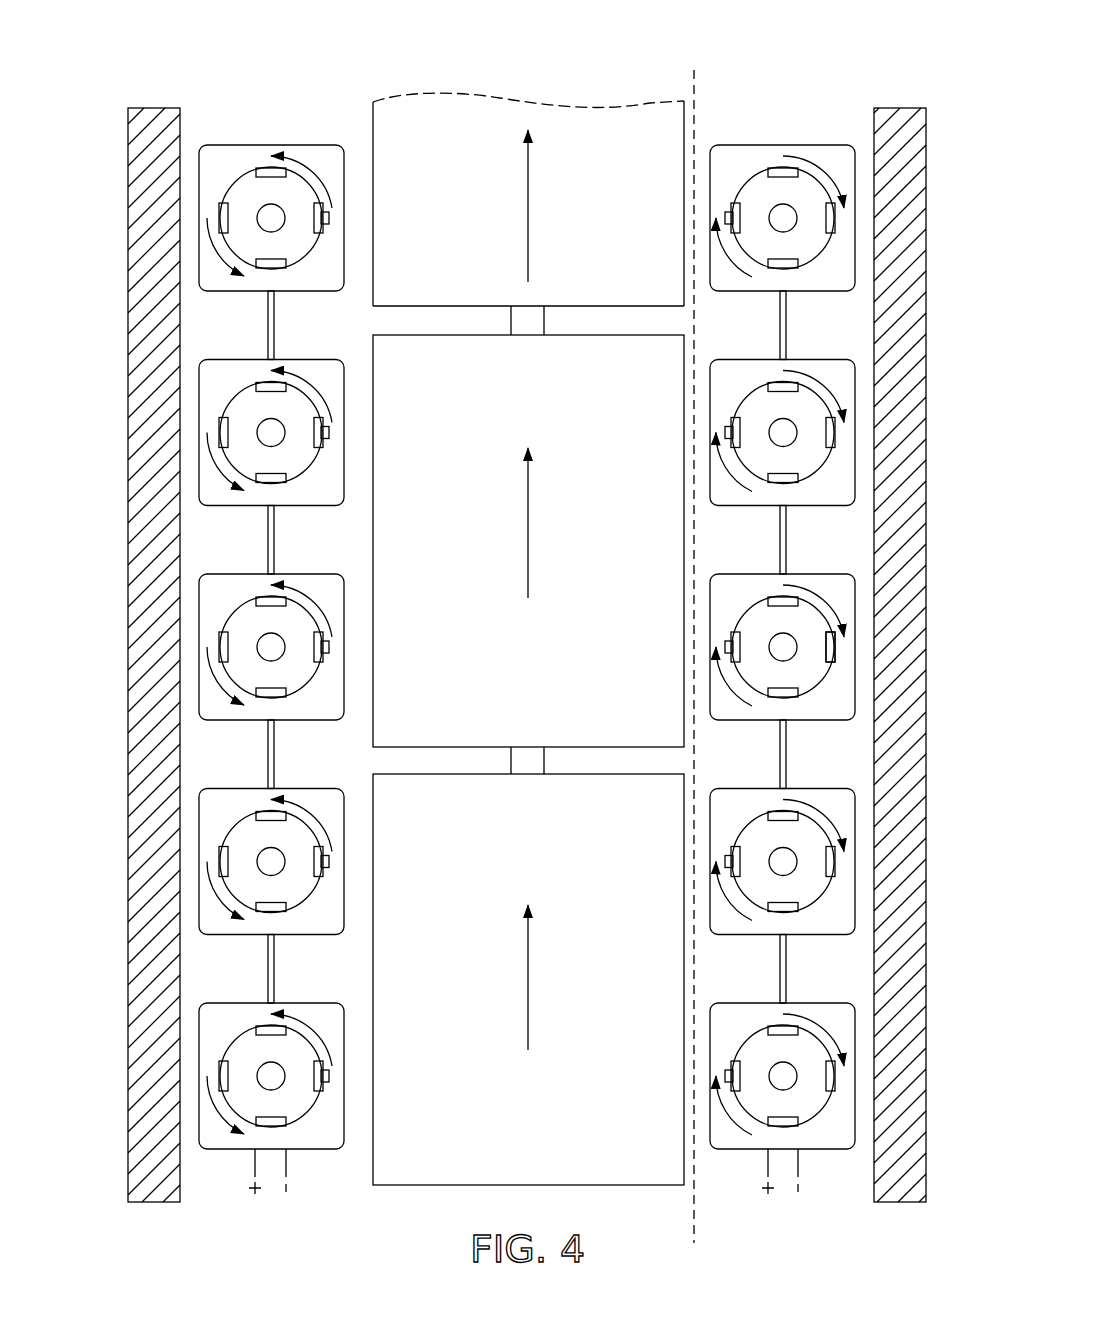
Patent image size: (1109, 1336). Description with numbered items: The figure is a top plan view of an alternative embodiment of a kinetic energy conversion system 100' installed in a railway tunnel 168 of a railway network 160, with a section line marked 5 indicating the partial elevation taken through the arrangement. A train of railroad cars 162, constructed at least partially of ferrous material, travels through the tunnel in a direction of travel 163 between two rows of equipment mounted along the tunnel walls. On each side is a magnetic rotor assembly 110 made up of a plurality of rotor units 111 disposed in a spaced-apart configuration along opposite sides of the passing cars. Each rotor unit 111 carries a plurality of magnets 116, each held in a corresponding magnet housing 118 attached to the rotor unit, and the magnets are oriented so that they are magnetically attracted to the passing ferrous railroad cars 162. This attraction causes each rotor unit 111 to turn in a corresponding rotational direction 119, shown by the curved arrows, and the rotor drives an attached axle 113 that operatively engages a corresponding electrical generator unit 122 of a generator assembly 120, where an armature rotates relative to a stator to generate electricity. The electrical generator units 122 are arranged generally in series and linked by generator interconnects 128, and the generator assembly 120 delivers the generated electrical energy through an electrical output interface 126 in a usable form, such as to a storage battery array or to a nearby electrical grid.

The kinetic energy conversion system 100' is at (523, 633).
The railway network 160 is at (532, 608).
The railroad cars 162 is at (493, 265).
The direction of travel 163 is at (528, 207).
The section line 5- 5 is at (694, 70).
The railway tunnel 168 is at (128, 475).
The electrical generator units 122 is at (200, 255).
The generator assembly 120 is at (847, 510).
The rotor units 111 is at (232, 182).
The axle 113 is at (260, 640).
The magnets 116 is at (330, 648).
The magnetic rotor assembly 110 is at (828, 692).
The magnet housings 118 is at (835, 655).
The rotational direction 119 is at (225, 475).
The generator interconnects 128 is at (268, 325).
The electrical output interface 126 is at (255, 1162).